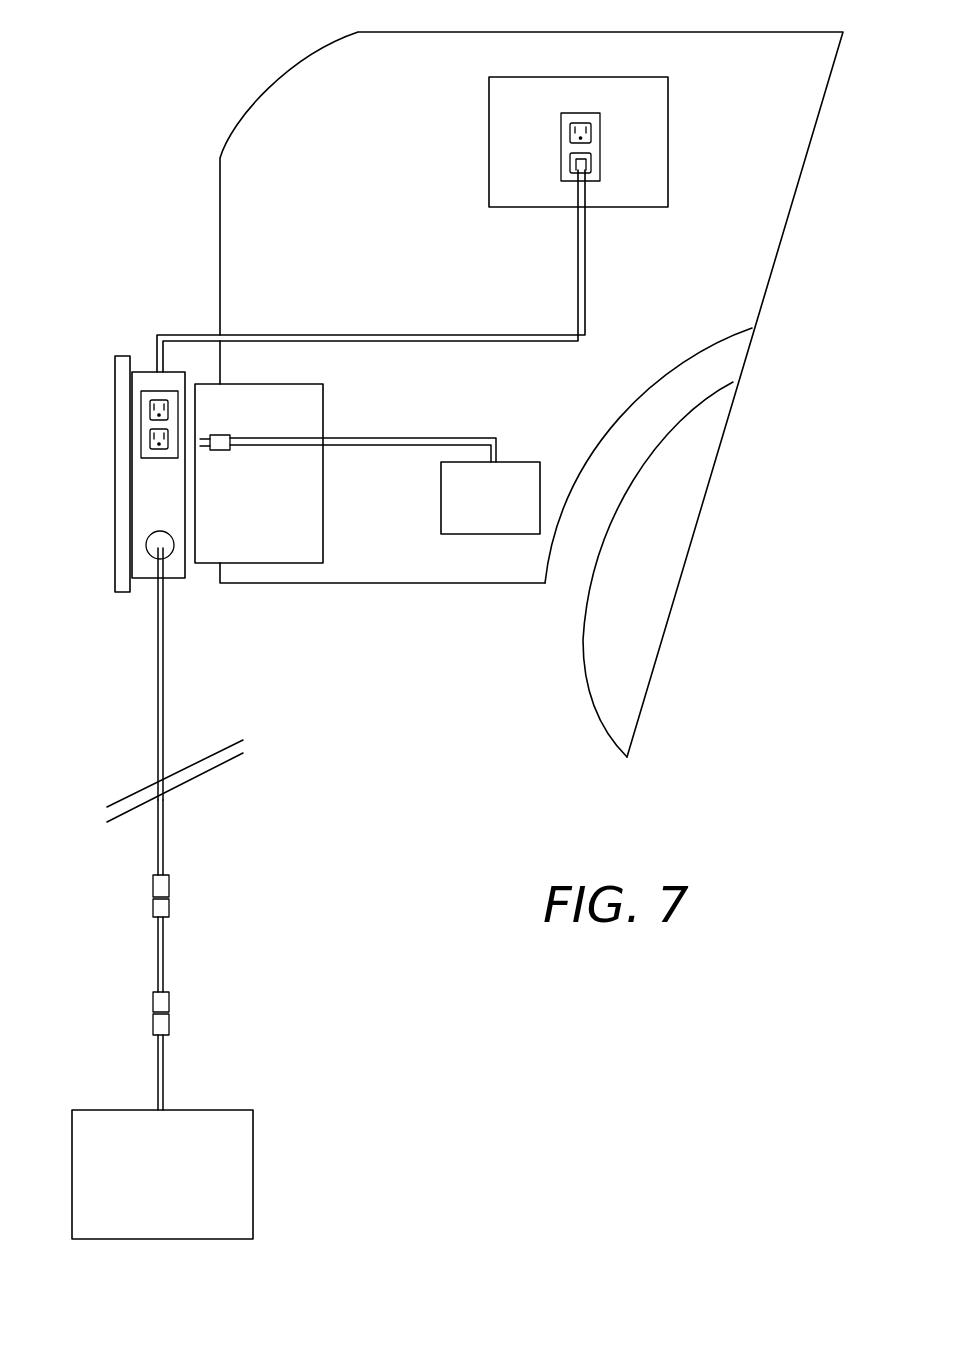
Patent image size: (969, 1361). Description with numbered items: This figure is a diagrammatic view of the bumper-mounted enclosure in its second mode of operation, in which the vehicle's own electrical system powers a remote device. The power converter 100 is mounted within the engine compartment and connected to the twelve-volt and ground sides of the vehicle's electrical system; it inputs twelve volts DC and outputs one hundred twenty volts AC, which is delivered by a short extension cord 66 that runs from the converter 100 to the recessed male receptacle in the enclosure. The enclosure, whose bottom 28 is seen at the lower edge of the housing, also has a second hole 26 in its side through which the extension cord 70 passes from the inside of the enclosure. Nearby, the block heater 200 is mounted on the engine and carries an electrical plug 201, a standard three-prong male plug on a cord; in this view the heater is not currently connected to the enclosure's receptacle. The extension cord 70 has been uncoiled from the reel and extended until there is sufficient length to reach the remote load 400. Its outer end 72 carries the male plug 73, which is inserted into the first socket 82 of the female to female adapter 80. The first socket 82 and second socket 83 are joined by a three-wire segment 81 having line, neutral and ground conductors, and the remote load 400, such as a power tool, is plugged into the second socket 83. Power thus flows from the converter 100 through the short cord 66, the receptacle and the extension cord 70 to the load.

The second hole 26 is at (162, 528).
The bottom 28 is at (176, 582).
The short extension cord 66 is at (465, 330).
The extension cord 70 is at (167, 667).
The outer end 72 is at (167, 825).
The male plug 73 is at (165, 888).
The female to female adapter 80 is at (205, 963).
The three-wire segment 81 is at (155, 955).
The first socket 82 is at (153, 903).
The second socket 83 is at (157, 1000).
The 12 VDC to 120 VAC converter 100 is at (489, 123).
The block heater 200 is at (478, 493).
The electrical plug 201 is at (225, 446).
The remote load 400 is at (208, 1158).